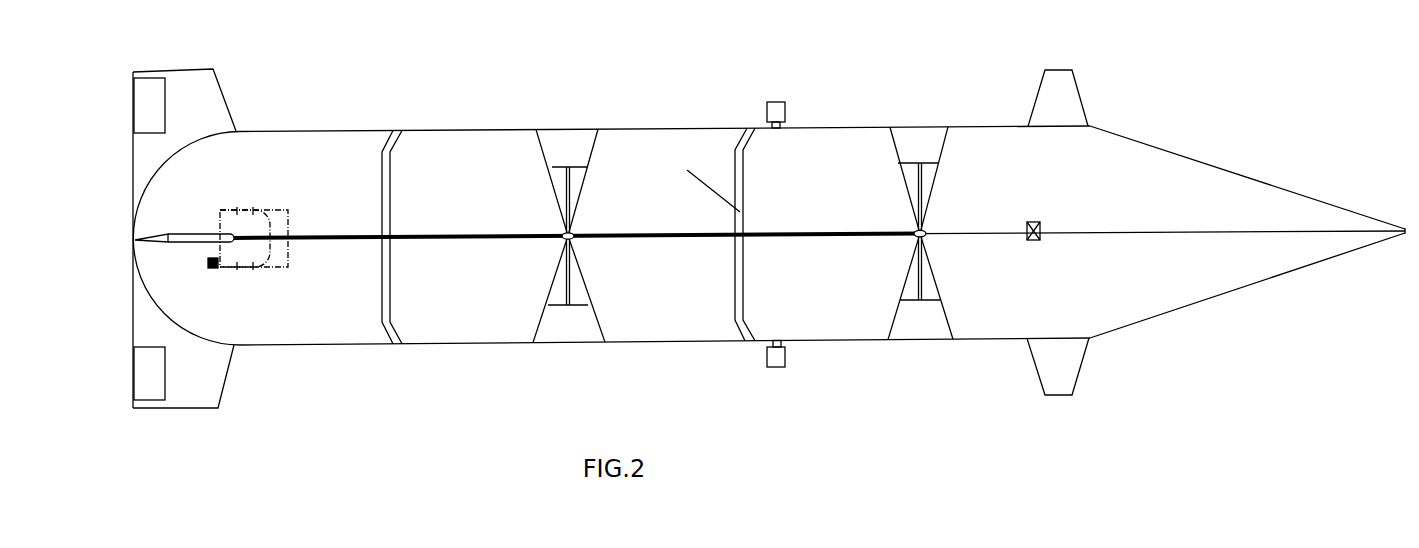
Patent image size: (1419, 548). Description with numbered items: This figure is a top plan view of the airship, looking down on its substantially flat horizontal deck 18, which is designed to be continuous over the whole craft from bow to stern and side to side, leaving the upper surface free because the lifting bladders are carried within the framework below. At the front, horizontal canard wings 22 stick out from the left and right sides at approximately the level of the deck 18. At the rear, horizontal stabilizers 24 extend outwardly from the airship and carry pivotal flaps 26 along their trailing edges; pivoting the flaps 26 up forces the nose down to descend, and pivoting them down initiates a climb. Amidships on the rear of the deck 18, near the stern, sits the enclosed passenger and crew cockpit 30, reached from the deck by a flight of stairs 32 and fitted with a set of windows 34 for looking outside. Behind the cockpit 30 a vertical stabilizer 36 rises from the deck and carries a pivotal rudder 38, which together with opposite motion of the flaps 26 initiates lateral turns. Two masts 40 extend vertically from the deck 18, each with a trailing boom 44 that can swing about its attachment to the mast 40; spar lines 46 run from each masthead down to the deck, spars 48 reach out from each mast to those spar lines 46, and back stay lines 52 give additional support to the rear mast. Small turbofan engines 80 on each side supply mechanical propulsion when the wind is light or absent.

The deck 18 is at (337, 322).
The canard wing 22 is at (1067, 113).
The horizontal stabilizer 24 is at (212, 120).
The pivotal flap 26 is at (147, 112).
The cockpit 30 is at (288, 212).
The flight of stairs 32 is at (220, 270).
The windows 34 is at (245, 210).
The vertical stabilizer 36 is at (183, 236).
The pivotal rudder 38 is at (165, 236).
The mast 40 is at (575, 232).
The boom 44 is at (850, 236).
The spar line 46 is at (540, 143).
The spar 48 is at (587, 167).
The back stay line 52 is at (387, 263).
The turbofan engine 80 is at (775, 113).